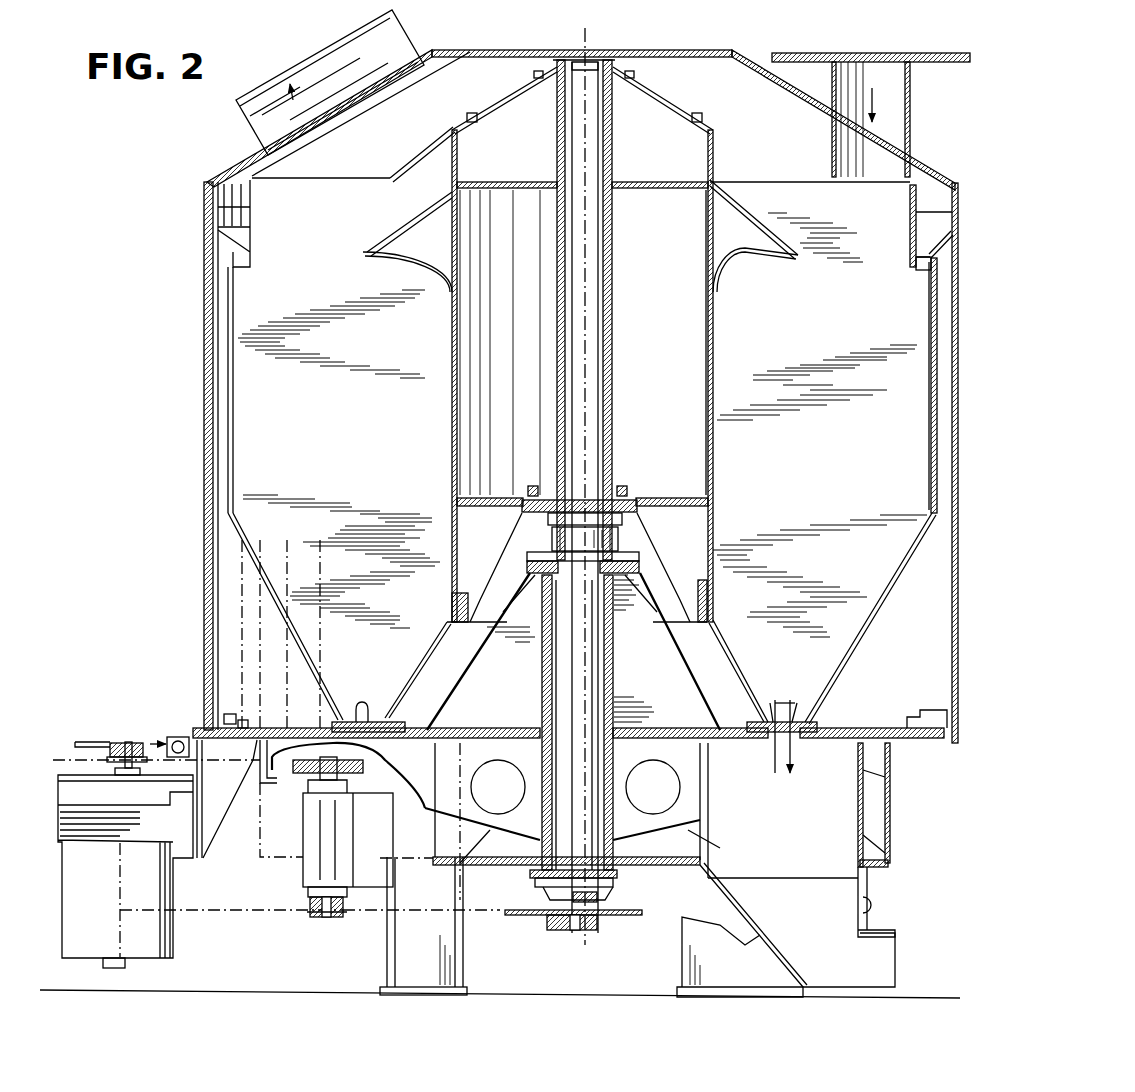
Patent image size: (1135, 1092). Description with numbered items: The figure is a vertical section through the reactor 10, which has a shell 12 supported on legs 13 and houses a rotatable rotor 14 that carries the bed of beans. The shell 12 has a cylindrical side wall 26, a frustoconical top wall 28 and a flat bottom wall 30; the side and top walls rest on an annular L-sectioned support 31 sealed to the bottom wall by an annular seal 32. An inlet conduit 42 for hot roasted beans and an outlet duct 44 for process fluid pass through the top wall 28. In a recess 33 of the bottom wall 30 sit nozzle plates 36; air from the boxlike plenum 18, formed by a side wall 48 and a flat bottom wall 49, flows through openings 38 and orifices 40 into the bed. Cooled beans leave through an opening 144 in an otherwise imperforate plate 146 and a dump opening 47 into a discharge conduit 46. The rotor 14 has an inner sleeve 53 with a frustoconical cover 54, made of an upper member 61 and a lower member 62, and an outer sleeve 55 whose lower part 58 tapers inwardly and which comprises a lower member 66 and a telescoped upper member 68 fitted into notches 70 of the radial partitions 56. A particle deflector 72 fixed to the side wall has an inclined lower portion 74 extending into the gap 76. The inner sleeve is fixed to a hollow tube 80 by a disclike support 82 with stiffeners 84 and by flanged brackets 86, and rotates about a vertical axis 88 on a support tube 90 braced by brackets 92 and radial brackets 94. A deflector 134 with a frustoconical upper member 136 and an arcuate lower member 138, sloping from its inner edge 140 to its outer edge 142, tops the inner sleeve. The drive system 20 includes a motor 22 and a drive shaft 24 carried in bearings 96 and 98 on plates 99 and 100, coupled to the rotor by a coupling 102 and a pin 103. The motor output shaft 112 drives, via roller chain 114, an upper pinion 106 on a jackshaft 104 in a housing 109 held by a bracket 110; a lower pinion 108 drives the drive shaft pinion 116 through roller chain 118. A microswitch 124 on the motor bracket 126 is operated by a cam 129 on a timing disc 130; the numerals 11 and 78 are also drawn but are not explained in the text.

The reactor 10 is at (170, 236).
The mounting plate 11 is at (107, 758).
The shell 12 is at (204, 374).
The legs 13 is at (434, 956).
The rotor 14 is at (228, 418).
The plenum 18 is at (893, 795).
The drive system 20 is at (180, 900).
The motor 22 is at (120, 907).
The rotor drive shaft 24 is at (563, 655).
The side wall 26 is at (206, 512).
The top wall 28 is at (516, 50).
The bottom wall 30 is at (925, 740).
The support 31 is at (231, 714).
The seal 32 is at (243, 720).
The recess 33 is at (838, 730).
The nozzle plates 36 is at (348, 722).
The openings 38 is at (404, 750).
The orifices 40 is at (361, 702).
The inlet conduit 42 is at (910, 100).
The outlet duct 44 is at (386, 38).
The discharge conduit 46 is at (890, 852).
The dump opening 47 is at (805, 745).
The side wall 48 is at (892, 820).
The bottom wall 49 is at (664, 866).
The inner sleeve 53 is at (714, 342).
The cover 54 is at (455, 124).
The outer sleeve 55 is at (940, 367).
The partitions 56 is at (333, 187).
The lower part 58 is at (882, 590).
The upper member 61 is at (713, 375).
The lower member 62 is at (732, 655).
The lower member 66 is at (930, 403).
The upper member 68 is at (910, 220).
The notches 70 is at (917, 246).
The particle deflector 72 is at (925, 205).
The lower portion 74 is at (944, 252).
The gap 76 is at (922, 270).
The liner wall 78 is at (930, 290).
The tube 80 is at (557, 298).
The support 82 is at (673, 497).
The stiffeners 84 is at (482, 559).
The brackets 86 is at (532, 149).
The vertical axis 88 is at (600, 297).
The support tube 90 is at (613, 648).
The brackets 92 is at (512, 702).
The radial brackets 94 is at (465, 860).
The bearing 96 is at (622, 540).
The bearing 98 is at (600, 896).
The plate 99 is at (527, 568).
The plate 100 is at (530, 873).
The coupling 102 is at (522, 508).
The pin 103 is at (568, 500).
The jackshaft 104 is at (332, 918).
The upper pinion 106 is at (308, 778).
The lower pinion 108 is at (308, 897).
The housing 109 is at (345, 842).
The bracket 110 is at (385, 785).
The output shaft 112 is at (128, 742).
The roller chain 114 is at (250, 765).
The drive shaft pinion 116 is at (630, 918).
The roller chain 118 is at (497, 916).
The microswitch 124 is at (172, 736).
The bracket 126 is at (218, 832).
The cam 129 is at (77, 740).
The timing disc 130 is at (114, 742).
The deflector 134 is at (393, 207).
The upper member 136 is at (430, 178).
The lower member 138 is at (378, 257).
The inner edge 140 is at (447, 310).
The outer edge 142 is at (370, 250).
The opening 144 is at (808, 712).
The plate 146 is at (745, 725).